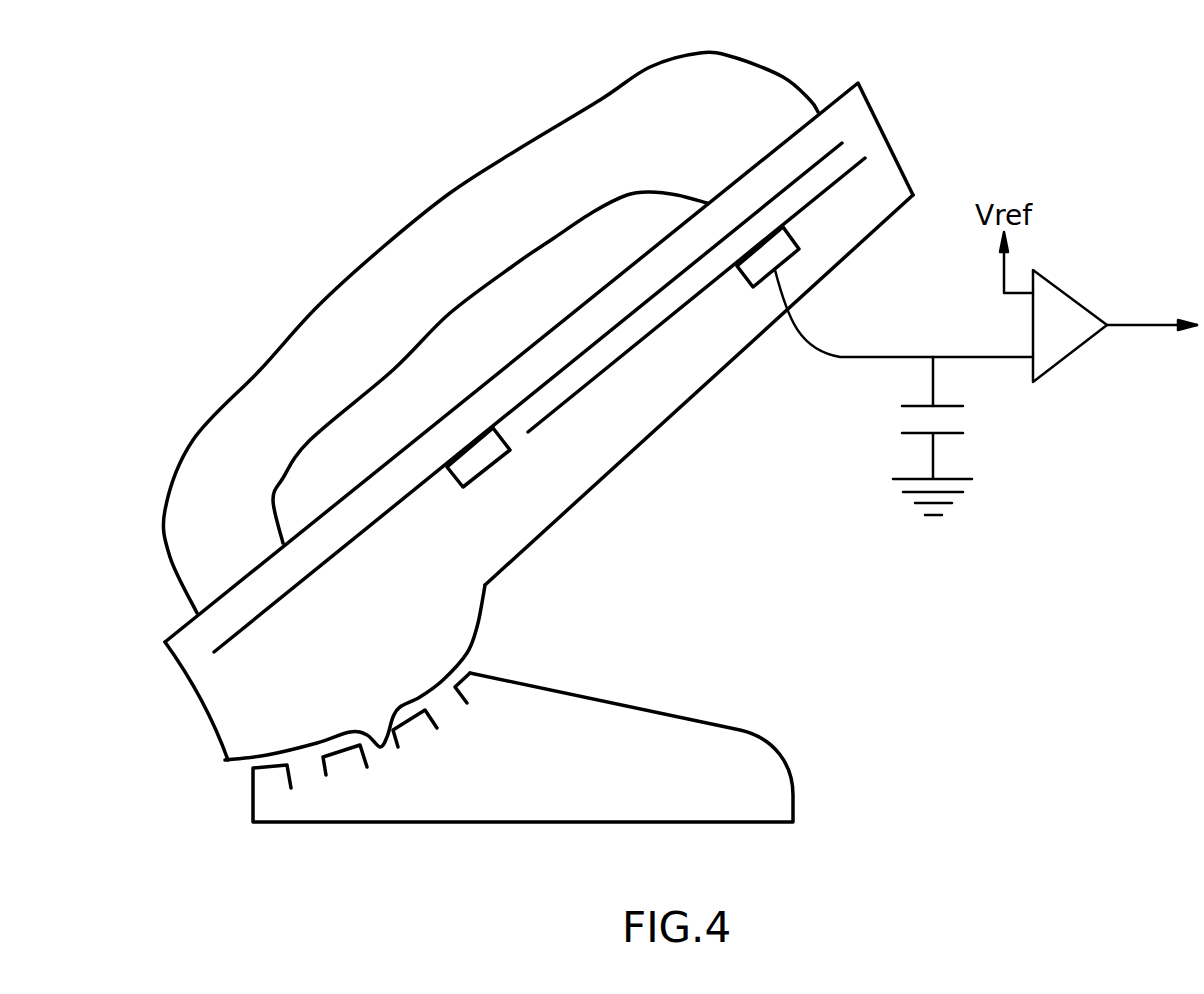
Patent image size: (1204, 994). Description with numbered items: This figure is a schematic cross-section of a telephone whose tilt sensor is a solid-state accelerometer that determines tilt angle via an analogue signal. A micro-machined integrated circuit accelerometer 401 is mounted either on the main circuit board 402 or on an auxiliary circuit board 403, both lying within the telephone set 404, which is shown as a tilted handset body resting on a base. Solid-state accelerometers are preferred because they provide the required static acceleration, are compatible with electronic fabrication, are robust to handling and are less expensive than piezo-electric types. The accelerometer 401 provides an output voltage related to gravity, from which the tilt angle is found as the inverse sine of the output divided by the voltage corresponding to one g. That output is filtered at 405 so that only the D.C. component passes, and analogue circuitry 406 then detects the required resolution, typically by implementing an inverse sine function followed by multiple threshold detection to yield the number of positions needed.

The micro-machined integrated circuit accelerometer 401 is at (797, 246).
The main circuit board 402 is at (328, 562).
The auxiliary circuit board 403 is at (588, 383).
The telephone set 404 is at (523, 555).
The filter 405 is at (952, 420).
The analogue circuitry 406 is at (1063, 360).